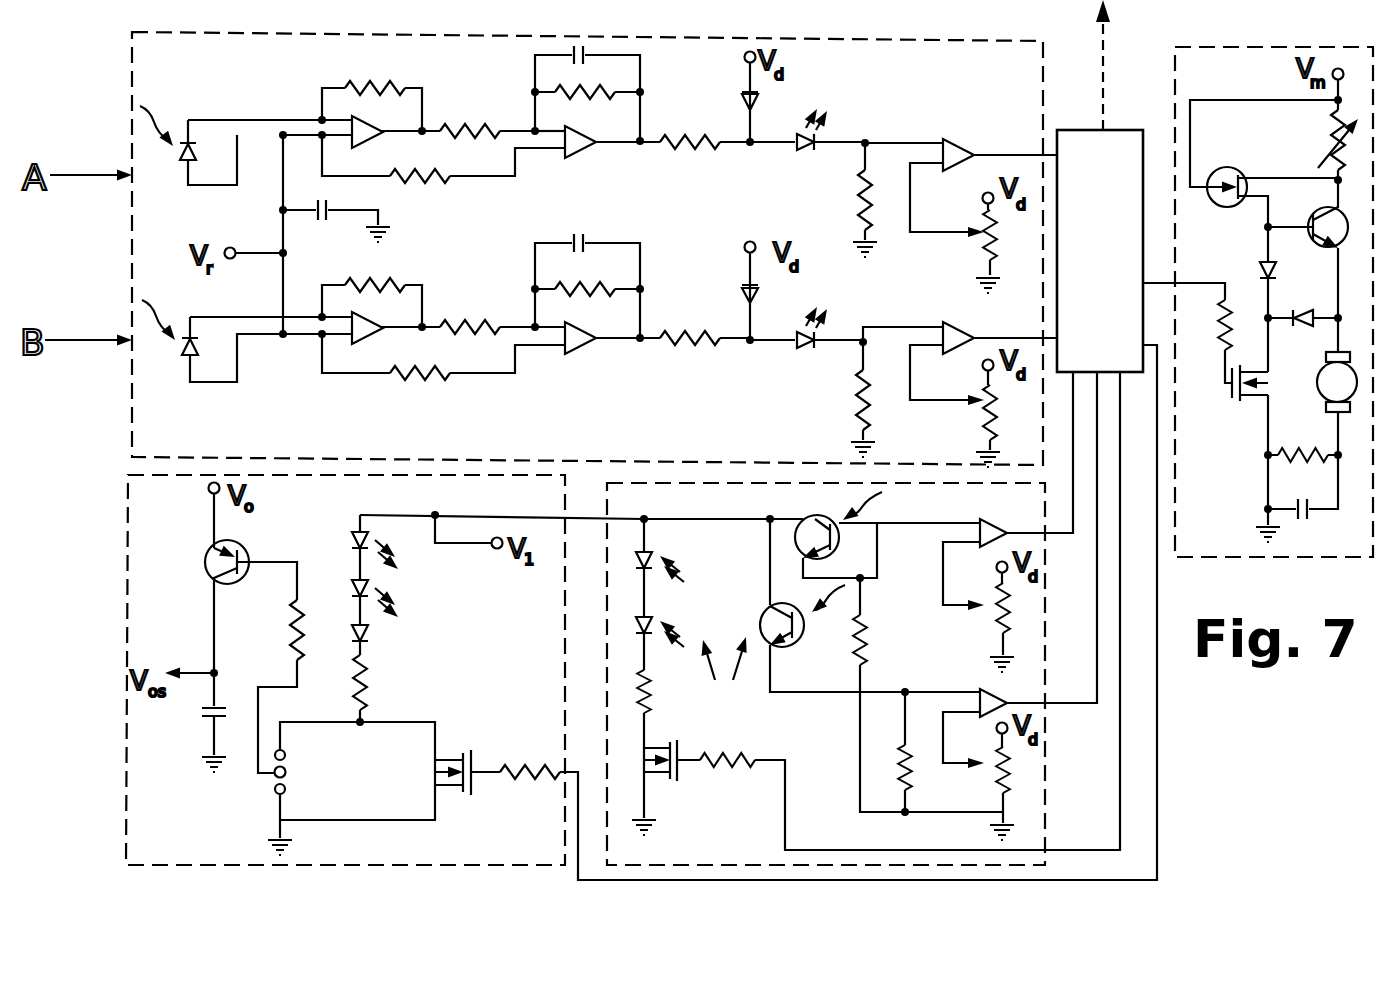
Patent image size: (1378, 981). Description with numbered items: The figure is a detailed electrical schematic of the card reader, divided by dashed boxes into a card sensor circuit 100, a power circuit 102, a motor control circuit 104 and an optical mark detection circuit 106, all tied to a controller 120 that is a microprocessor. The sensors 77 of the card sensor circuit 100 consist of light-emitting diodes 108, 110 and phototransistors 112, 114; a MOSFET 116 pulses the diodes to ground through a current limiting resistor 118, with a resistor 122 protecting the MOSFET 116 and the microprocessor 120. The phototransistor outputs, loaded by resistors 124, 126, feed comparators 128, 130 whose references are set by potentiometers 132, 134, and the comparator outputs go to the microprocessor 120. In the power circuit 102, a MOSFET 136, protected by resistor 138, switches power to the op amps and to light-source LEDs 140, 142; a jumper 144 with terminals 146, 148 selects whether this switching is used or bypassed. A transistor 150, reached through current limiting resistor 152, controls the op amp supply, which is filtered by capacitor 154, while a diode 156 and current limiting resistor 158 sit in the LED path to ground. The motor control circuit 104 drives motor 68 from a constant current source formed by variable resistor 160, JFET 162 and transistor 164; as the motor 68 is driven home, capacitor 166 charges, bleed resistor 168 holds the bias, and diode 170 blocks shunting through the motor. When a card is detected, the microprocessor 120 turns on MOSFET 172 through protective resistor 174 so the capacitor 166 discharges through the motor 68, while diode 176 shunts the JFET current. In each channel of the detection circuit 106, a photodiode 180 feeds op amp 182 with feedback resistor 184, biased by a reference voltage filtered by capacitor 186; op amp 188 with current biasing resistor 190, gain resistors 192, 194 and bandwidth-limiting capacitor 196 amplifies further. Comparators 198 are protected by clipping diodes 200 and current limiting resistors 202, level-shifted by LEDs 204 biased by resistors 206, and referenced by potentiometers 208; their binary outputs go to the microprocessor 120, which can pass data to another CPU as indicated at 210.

The motor 68 is at (1317, 378).
The sensors 77 is at (725, 681).
The card sensor circuit 100 is at (1047, 836).
The power circuit 102 is at (128, 712).
The motor control circuit 104 is at (1178, 68).
The optical mark detection circuit 106 is at (130, 405).
The light-emitting diode 108 is at (655, 553).
The light-emitting diode 110 is at (655, 618).
The phototransistor 112 is at (873, 537).
The phototransistor 114 is at (783, 640).
The MOSFET 116 is at (679, 775).
The current limiting resistor 118 is at (652, 703).
The controller 120 is at (1122, 238).
The resistor 122 is at (738, 762).
The resistor 124 is at (868, 620).
The resistor 126 is at (905, 768).
The comparator 128 is at (1010, 522).
The comparator 130 is at (990, 690).
The potentiometer 132 is at (1010, 628).
The potentiometer 134 is at (1012, 772).
The MOSFET 136 is at (476, 752).
The resistor 138 is at (514, 765).
The light-emitting diode 140 is at (358, 530).
The light-emitting diode 142 is at (358, 580).
The jumper 144 is at (299, 788).
The terminal 146 is at (286, 757).
The terminal 148 is at (286, 790).
The transistor 150 is at (207, 560).
The current limiting resistor 152 is at (290, 640).
The capacitor 154 is at (207, 720).
The diode 156 is at (368, 642).
The current limiting resistor 158 is at (368, 688).
The variable resistor 160 is at (1330, 140).
The junction field-effect transistor 162 is at (1218, 166).
The transistor 164 is at (1325, 212).
The capacitor 166 is at (1292, 515).
The bleed resistor 168 is at (1300, 452).
The diode 170 is at (1305, 297).
The MOSFET 172 is at (1247, 401).
The protective resistor 174 is at (1215, 332).
The diode 176 is at (1258, 272).
The photodiode 180 is at (186, 166).
The op amp 182 is at (375, 144).
The feedback resistor 184 is at (372, 84).
The filter capacitor 186 is at (324, 222).
The op amp 188 is at (578, 148).
The current biasing resistor 190 is at (413, 182).
The resistor 192 is at (476, 122).
The resistor 194 is at (545, 85).
The capacitor 196 is at (590, 45).
The comparator 198 is at (952, 143).
The clipping diode 200 is at (760, 95).
The current limiting resistor 202 is at (690, 150).
The light-emitting diode 204 is at (820, 134).
The resistor 206 is at (856, 215).
The potentiometer 208 is at (985, 252).
The output to central processing unit 210 is at (1100, 88).